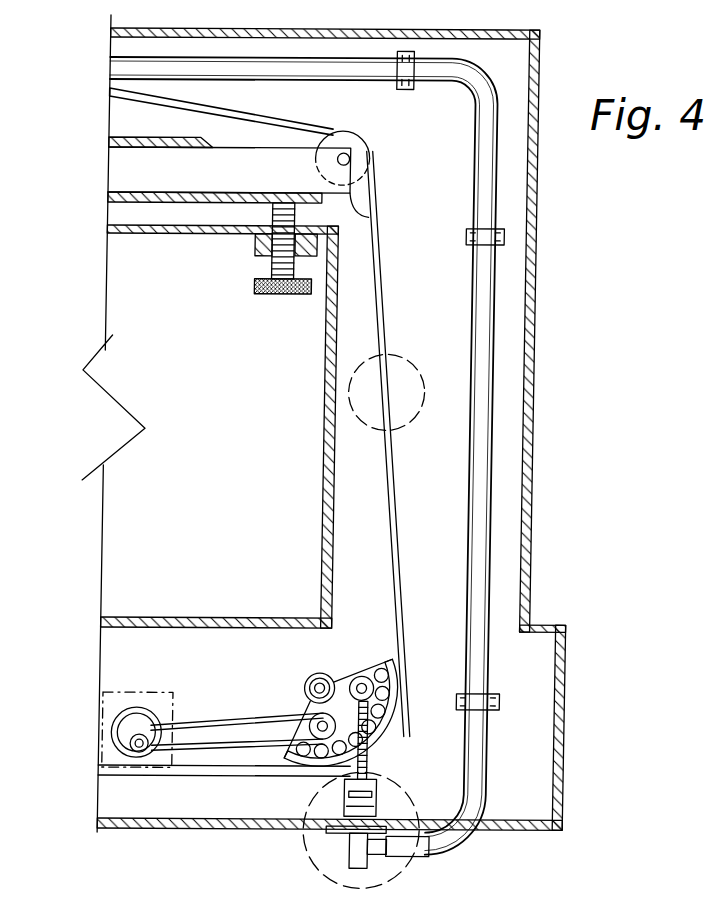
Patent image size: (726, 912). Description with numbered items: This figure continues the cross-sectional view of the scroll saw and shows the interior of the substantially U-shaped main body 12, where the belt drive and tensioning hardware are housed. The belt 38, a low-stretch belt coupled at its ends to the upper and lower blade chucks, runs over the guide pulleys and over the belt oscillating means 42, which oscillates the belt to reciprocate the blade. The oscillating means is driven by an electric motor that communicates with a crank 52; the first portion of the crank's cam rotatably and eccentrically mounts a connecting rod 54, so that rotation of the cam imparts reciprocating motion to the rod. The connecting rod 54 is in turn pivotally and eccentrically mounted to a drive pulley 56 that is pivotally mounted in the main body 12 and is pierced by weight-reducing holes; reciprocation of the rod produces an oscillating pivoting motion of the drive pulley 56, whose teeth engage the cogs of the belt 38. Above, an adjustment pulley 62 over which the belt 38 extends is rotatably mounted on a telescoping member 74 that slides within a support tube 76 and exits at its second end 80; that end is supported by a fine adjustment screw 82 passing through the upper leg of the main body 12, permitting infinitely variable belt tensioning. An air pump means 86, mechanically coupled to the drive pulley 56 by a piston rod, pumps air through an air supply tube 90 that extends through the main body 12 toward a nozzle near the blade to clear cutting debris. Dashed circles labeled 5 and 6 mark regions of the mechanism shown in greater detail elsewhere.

The detail region of FIG. 5 is at (356, 398).
The detail region of FIG. 6 is at (316, 842).
The main body 12 is at (541, 184).
The belt 38 is at (398, 508).
The belt oscillating means 42 is at (329, 668).
The crank 52 is at (164, 692).
The connecting rod 54 is at (275, 682).
The drive pulley 56 is at (392, 660).
The adjustment pulley 62 is at (358, 152).
The telescoping member 74 is at (277, 163).
The support tube 76 is at (188, 202).
The second end 80 is at (375, 216).
The fine adjustment screw 82 is at (264, 294).
The air pump means 86 is at (352, 839).
The air supply tube 90 is at (492, 290).